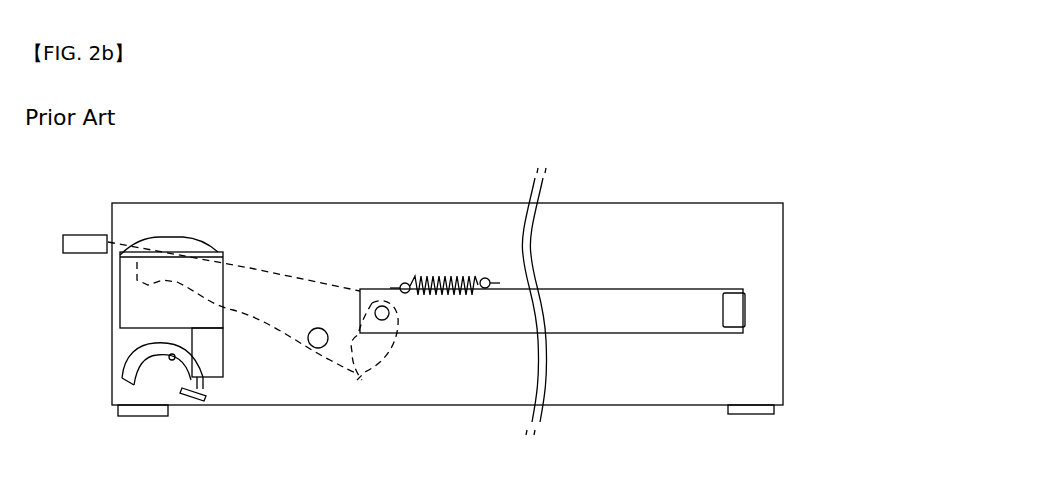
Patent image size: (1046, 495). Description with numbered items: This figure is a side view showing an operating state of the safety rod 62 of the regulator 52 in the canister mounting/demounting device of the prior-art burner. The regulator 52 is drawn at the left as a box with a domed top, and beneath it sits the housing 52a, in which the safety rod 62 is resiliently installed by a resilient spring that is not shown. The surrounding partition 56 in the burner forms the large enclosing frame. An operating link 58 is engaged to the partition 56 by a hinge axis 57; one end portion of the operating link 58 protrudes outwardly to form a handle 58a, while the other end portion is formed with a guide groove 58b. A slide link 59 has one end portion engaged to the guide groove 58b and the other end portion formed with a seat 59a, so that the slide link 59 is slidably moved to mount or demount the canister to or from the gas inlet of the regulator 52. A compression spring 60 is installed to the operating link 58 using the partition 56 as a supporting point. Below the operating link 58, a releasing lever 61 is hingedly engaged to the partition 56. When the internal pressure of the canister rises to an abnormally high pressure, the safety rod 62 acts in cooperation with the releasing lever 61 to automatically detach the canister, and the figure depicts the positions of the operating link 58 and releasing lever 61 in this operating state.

The regulator 52 is at (122, 301).
The housing 52a is at (192, 340).
The partition 56 is at (603, 218).
The hinge axis 57 is at (316, 348).
The operating link 58 is at (258, 335).
The handle 58a is at (80, 235).
The guide groove 58b is at (360, 352).
The slide link 59 is at (673, 297).
The seat 59a is at (735, 305).
The compression spring 60 is at (443, 273).
The releasing lever 61 is at (120, 360).
The safety rod 62 is at (210, 391).